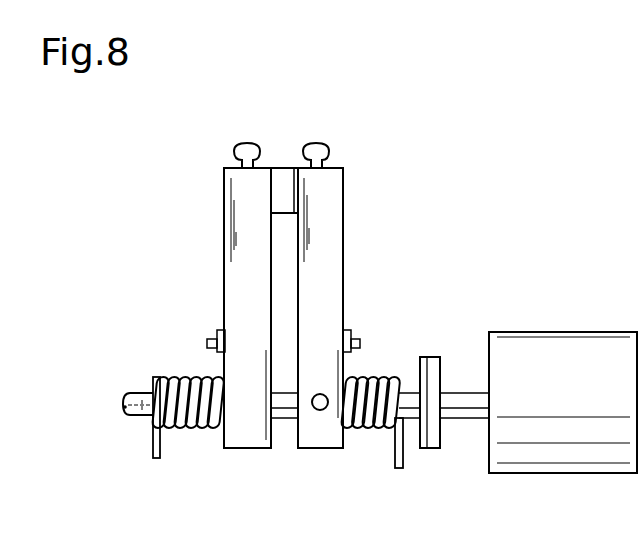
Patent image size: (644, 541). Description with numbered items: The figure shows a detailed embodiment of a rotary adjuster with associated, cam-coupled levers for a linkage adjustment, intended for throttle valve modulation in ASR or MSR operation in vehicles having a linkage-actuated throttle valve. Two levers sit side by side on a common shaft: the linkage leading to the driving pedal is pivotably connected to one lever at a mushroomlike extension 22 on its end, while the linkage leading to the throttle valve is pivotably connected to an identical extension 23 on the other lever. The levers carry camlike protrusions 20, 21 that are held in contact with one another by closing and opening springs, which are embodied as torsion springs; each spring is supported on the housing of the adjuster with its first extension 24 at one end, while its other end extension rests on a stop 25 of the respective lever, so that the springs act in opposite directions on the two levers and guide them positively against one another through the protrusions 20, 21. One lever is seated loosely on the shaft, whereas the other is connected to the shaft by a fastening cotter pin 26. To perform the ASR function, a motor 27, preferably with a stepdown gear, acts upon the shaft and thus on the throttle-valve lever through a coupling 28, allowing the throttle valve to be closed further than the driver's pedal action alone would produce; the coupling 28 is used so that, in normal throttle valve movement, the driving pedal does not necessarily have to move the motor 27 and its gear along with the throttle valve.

The camlike protrusion 20 is at (279, 186).
The camlike protrusion 21 is at (295, 168).
The mushroomlike extension 22 is at (246, 150).
The extension 23 is at (320, 150).
The first extension 24 is at (158, 453).
The stop 25 is at (213, 338).
The fastening cotter pin 26 is at (323, 410).
The motor 27 is at (543, 355).
The coupling 28 is at (427, 368).